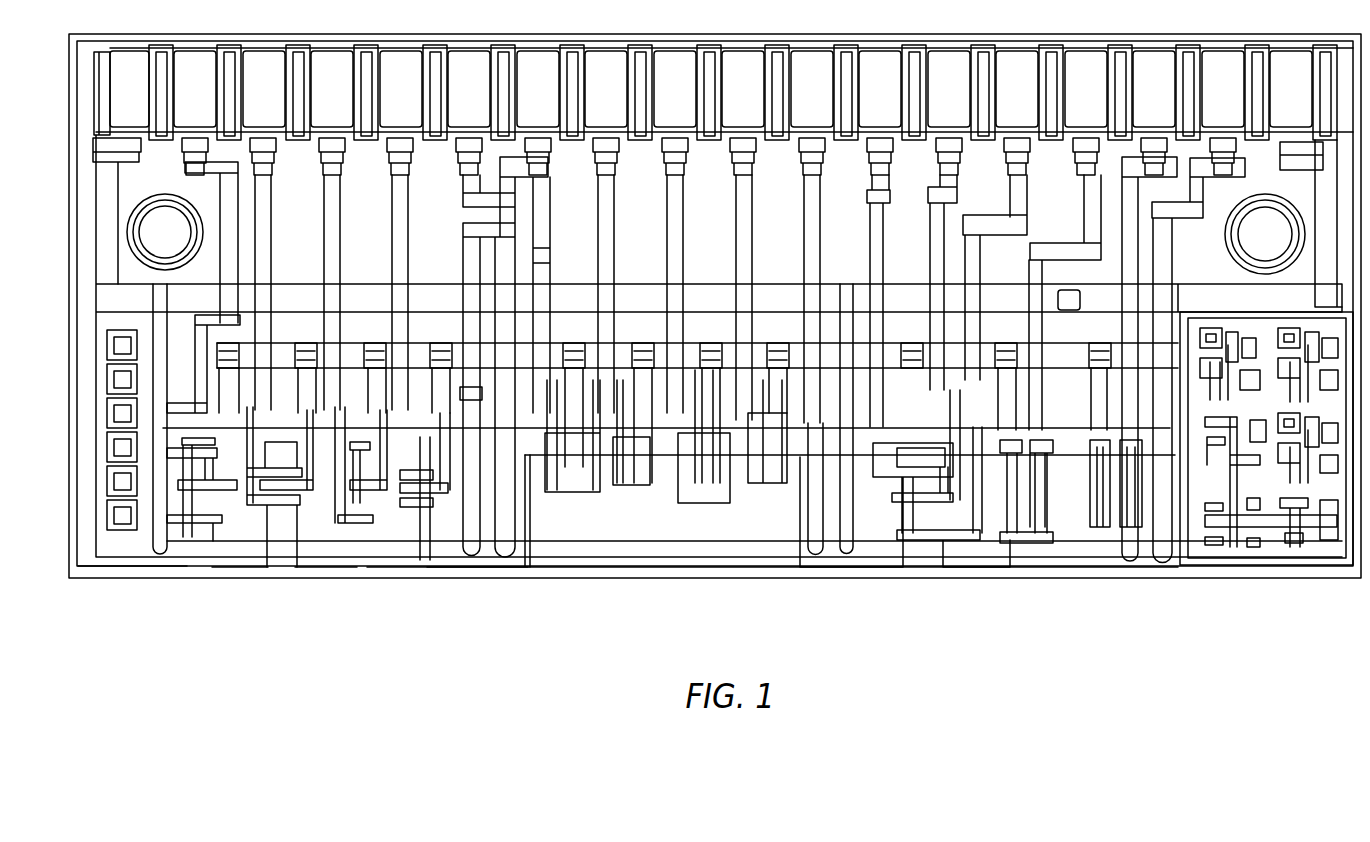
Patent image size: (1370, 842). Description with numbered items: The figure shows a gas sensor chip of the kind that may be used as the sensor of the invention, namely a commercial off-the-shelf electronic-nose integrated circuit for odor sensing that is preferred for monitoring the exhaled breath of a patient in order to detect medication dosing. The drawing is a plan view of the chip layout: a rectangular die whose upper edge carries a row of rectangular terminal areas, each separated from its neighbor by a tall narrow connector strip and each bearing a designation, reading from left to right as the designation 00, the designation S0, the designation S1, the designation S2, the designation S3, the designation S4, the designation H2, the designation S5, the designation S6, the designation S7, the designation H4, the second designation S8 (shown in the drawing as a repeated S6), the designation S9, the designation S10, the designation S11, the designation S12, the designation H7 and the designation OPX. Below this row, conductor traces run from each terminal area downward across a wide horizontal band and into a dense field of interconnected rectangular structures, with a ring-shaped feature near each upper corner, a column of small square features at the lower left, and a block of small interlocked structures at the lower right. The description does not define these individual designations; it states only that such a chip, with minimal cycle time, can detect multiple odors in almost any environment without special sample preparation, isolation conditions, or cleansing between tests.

The pad 00 is at (129, 89).
The pad S0 is at (195, 89).
The pad S1 is at (264, 89).
The pad S2 is at (332, 89).
The pad S3 is at (401, 89).
The pad S4 is at (469, 89).
The pad H2 is at (538, 89).
The pad S5 is at (606, 89).
The pad S6 is at (675, 89).
The pad S7 is at (743, 89).
The pad H4 is at (812, 89).
The pad S6 (second) S8 is at (880, 89).
The pad S9 is at (949, 89).
The pad S10 is at (1017, 89).
The pad S11 is at (1086, 89).
The pad S12 is at (1154, 89).
The pad H7 is at (1223, 89).
The pad OPX is at (1291, 89).